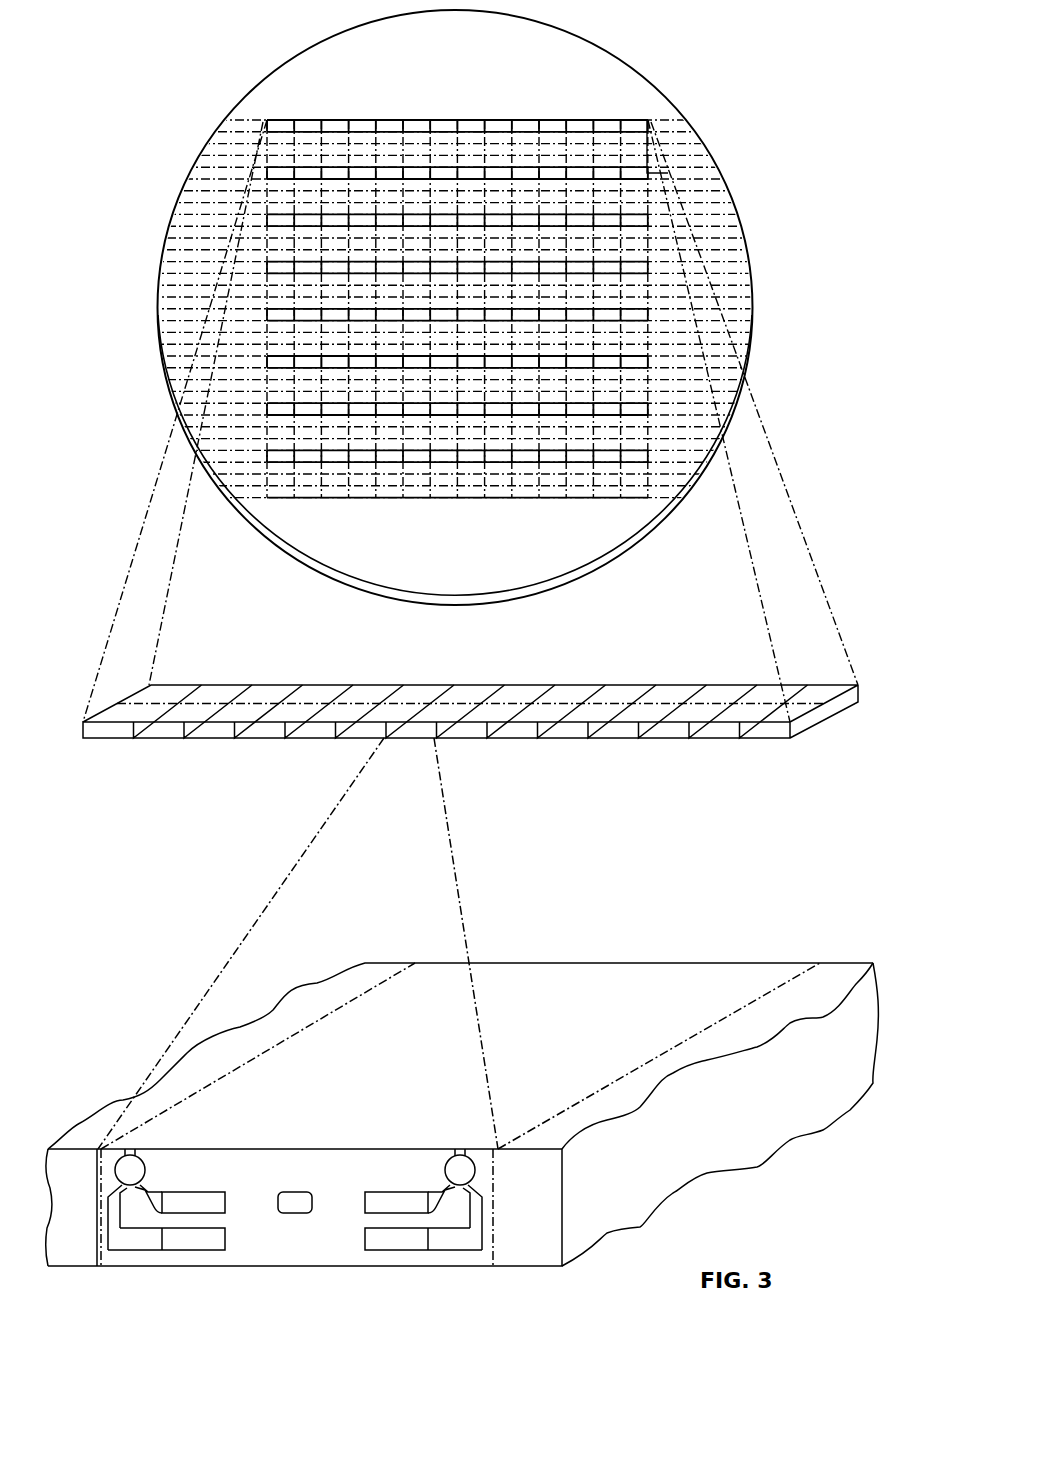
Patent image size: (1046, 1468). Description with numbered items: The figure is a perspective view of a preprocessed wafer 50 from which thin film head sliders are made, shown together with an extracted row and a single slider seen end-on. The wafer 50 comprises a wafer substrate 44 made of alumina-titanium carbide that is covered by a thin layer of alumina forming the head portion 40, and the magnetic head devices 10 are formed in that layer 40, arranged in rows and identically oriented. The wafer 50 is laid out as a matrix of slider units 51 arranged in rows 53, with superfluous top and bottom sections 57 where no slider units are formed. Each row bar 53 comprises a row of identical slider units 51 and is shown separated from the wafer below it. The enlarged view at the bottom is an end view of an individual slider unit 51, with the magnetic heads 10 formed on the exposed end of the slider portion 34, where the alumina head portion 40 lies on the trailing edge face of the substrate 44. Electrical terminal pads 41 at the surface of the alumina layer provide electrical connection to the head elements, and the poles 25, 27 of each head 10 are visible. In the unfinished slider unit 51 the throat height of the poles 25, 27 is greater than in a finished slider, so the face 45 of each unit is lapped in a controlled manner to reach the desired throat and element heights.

The magnetic head 10 is at (148, 1160).
The pole 25 is at (467, 1151).
The pole 27 is at (378, 1200).
The slider portion 34 is at (815, 718).
The head portion 40 is at (205, 740).
The electrical terminal pad 41 is at (212, 1250).
The wafer substrate 44 is at (645, 533).
The face 45 is at (513, 690).
The wafer 50 is at (772, 220).
The slider unit 51 is at (363, 120).
The row bar 53 is at (648, 122).
The top and bottom section 57 is at (313, 63).